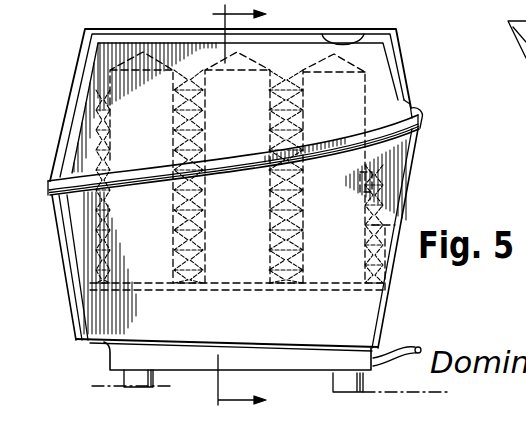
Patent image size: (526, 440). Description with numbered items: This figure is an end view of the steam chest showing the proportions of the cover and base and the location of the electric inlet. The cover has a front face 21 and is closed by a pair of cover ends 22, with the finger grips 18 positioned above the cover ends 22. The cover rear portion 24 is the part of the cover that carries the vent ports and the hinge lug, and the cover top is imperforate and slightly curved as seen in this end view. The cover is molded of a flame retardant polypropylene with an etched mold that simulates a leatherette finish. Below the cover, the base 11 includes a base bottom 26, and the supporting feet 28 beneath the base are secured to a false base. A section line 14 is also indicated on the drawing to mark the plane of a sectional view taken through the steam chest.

The housing body 11 is at (410, 193).
The section line 14- 14 is at (225, 207).
The latch recess 18 is at (361, 36).
The cover 21 is at (74, 77).
The rim 22 is at (88, 137).
The cover lip 24 is at (412, 71).
The base 26 is at (287, 357).
The feet 28 is at (127, 378).